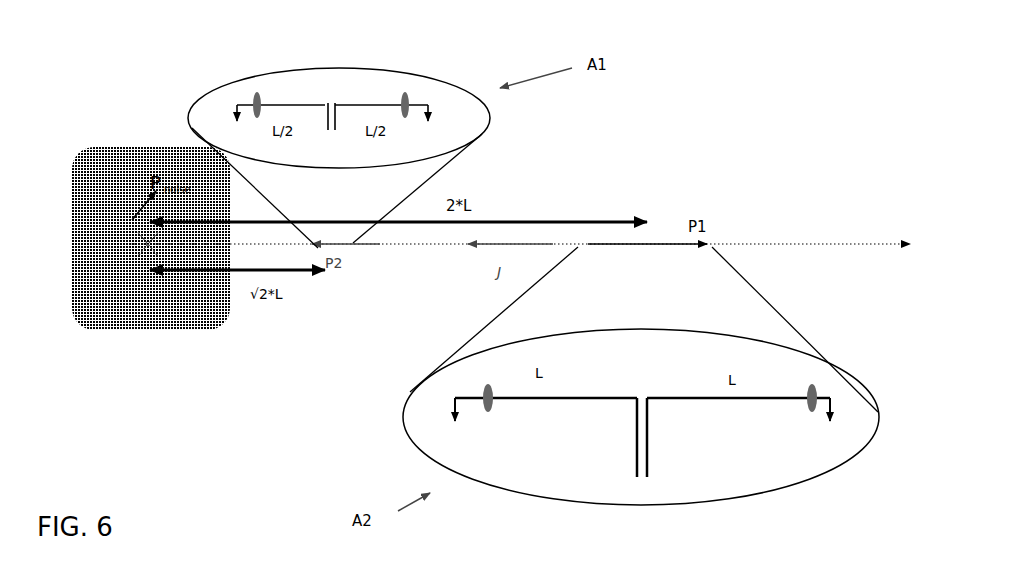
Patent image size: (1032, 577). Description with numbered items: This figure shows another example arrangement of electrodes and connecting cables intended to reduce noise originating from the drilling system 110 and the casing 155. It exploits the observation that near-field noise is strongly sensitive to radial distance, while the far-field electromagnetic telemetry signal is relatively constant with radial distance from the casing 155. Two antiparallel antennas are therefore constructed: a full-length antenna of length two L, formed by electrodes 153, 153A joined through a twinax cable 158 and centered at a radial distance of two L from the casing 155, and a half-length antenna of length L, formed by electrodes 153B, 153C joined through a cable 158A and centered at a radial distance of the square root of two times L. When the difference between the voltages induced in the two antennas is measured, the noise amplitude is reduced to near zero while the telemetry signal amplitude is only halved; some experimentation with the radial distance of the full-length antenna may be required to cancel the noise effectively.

The drilling system 110 is at (136, 238).
The casing 155 is at (146, 255).
The electrode 153 is at (538, 417).
The ground electrode 153A is at (738, 408).
The antenna element 153B is at (272, 115).
The antenna element 153C is at (389, 121).
The twinax cable 158 is at (649, 454).
The antenna feed 158A is at (336, 141).